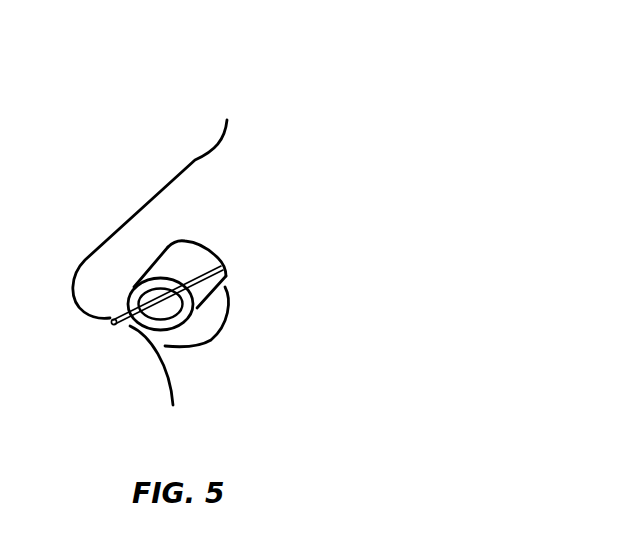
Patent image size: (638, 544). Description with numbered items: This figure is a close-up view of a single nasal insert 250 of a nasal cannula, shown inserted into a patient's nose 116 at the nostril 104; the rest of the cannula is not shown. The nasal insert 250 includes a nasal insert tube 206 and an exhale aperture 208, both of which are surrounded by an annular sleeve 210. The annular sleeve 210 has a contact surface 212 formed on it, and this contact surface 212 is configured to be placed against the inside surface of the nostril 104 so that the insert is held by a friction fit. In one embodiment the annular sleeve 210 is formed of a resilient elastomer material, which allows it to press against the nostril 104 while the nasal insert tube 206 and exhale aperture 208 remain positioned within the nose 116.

The nostril 104 is at (158, 335).
The nose 116 is at (183, 200).
The nasal insert tube 206 is at (113, 325).
The exhale aperture 208 is at (163, 309).
The annular sleeve 210 is at (185, 258).
The contact surface 212 is at (193, 273).
The nasal insert 250 is at (241, 202).